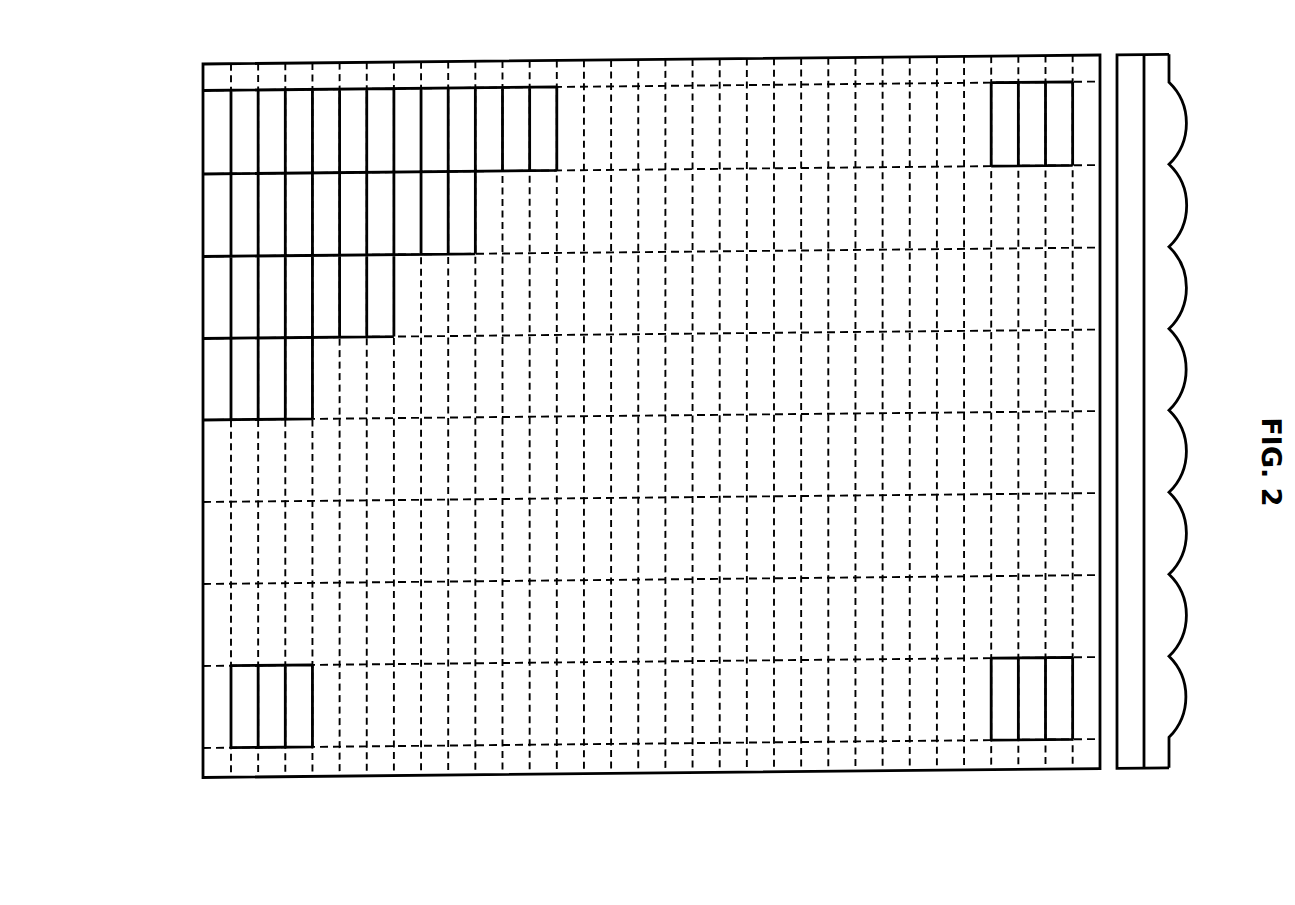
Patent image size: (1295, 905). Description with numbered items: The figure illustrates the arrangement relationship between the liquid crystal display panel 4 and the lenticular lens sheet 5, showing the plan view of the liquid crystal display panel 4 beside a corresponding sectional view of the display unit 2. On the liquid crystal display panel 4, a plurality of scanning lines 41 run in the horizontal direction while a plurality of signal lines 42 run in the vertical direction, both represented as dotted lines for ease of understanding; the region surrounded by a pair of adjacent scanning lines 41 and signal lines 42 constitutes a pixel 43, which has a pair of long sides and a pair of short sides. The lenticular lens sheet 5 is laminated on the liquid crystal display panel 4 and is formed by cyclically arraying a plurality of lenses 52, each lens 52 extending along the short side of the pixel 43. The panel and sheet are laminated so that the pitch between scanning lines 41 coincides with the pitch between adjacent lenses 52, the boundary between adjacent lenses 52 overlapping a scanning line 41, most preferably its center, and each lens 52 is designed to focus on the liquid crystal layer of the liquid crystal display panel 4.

The display unit 2 is at (611, 393).
The liquid crystal display panel 4 is at (1127, 779).
The lenticular lens sheet 5 is at (1194, 432).
The scanning lines 41 is at (218, 419).
The signal lines 42 is at (287, 81).
The pixel 43 is at (374, 122).
The lenses 52 is at (1186, 298).